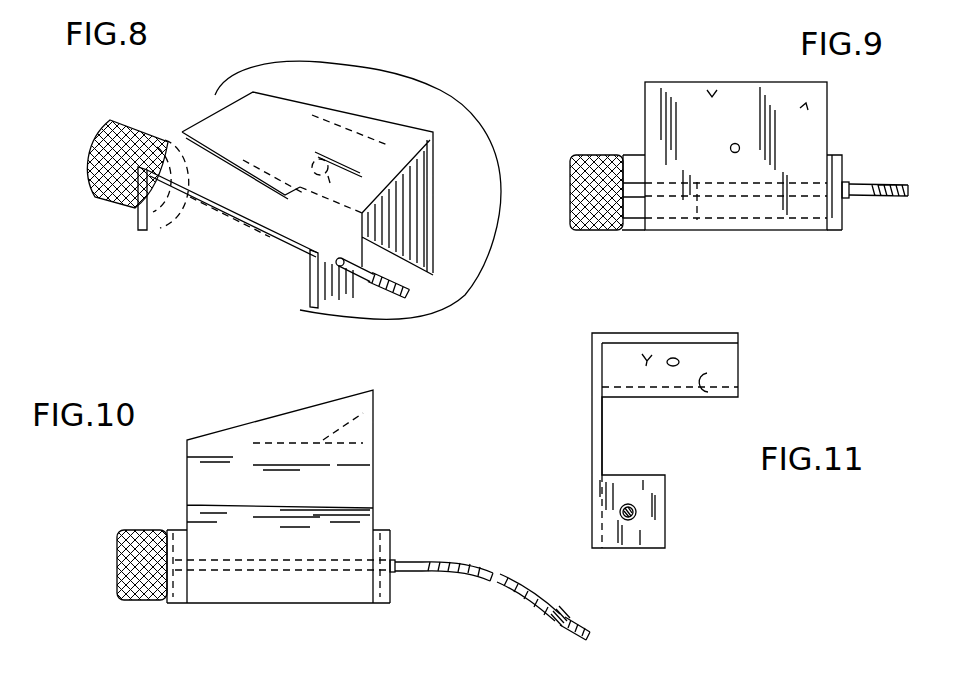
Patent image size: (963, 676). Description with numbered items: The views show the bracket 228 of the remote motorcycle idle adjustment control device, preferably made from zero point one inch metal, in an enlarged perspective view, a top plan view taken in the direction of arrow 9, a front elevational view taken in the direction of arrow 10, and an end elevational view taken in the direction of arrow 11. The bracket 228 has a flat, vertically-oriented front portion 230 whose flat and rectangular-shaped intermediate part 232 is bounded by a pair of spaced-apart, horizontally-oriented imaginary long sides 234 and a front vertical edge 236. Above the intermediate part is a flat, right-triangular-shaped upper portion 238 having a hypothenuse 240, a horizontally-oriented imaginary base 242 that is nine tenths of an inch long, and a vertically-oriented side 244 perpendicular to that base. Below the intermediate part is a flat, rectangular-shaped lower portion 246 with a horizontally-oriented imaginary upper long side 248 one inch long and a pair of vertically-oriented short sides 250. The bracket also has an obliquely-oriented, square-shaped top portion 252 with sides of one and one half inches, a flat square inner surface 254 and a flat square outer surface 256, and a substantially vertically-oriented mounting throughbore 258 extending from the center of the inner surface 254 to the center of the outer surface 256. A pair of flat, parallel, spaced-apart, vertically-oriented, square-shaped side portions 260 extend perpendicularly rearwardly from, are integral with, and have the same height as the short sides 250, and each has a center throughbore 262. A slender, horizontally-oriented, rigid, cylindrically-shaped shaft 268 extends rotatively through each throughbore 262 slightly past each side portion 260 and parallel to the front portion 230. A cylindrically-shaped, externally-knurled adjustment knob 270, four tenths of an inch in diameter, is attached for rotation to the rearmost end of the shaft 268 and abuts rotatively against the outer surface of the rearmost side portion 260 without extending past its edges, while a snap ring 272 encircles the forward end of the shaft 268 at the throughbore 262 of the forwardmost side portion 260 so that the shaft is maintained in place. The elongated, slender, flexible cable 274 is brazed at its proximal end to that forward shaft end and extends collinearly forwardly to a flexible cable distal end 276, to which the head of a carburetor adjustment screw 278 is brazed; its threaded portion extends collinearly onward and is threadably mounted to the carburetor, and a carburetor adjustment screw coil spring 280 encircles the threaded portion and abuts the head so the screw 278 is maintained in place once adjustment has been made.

In FIG. 8, the arrow 9 is at (403, 103).
In FIG. 9, the arrow 10 is at (720, 236).
In FIG. 10, the arrow 11 is at (430, 523).
In FIG. 8, the bracket 228 is at (207, 122).
In FIG. 9, the bracket 228 is at (673, 81).
In FIG. 10, the bracket 228 is at (234, 424).
In FIG. 11, the bracket 228 is at (590, 378).
In FIG. 8, the bracket flat, vertically-oriented front portion 230 is at (240, 117).
In FIG. 10, the bracket flat, vertically-oriented front portion 230 is at (200, 472).
In FIG. 11, the bracket flat, vertically-oriented front portion 230 is at (590, 418).
In FIG. 8, the bracket front portion flat and rectangular-shaped intermediate part 232 is at (412, 207).
In FIG. 10, the bracket front portion flat and rectangular-shaped intermediate part 232 is at (360, 463).
In FIG. 8, the bracket front portion intermediate part pair of spaced-apart and horizontally-or 234 is at (418, 102).
In FIG. 10, the bracket front portion intermediate part pair of spaced-apart and horizontally-or 234 is at (375, 411).
In FIG. 8, the bracket front portion intermediate part front vertical edge 236 is at (395, 223).
In FIG. 10, the bracket front portion intermediate part front vertical edge 236 is at (376, 507).
In FIG. 8, the bracket front flat, vertically-oriented, and right-triangular-shaped upper porti 238 is at (347, 117).
In FIG. 10, the bracket front flat, vertically-oriented, and right-triangular-shaped upper porti 238 is at (336, 420).
In FIG. 8, the bracket front upper portion hypothenuse 240 is at (290, 92).
In FIG. 10, the bracket front upper portion hypothenuse 240 is at (258, 422).
In FIG. 8, the bracket front upper portion horizontally-oriented imaginary base 242 is at (320, 131).
In FIG. 10, the bracket front upper portion horizontally-oriented imaginary base 242 is at (250, 471).
In FIG. 8, the bracket front upper portion vertically-oriented side 244 is at (367, 167).
In FIG. 10, the bracket front upper portion vertically-oriented side 244 is at (376, 428).
In FIG. 8, the bracket front flat, vertically-oriented, and rectangular-shaped lower portion 246 is at (222, 182).
In FIG. 10, the bracket front flat, vertically-oriented, and rectangular-shaped lower portion 246 is at (293, 595).
In FIG. 8, the bracket front lower portion horizontally-oriented imaginary upper long side 248 is at (232, 149).
In FIG. 10, the bracket front lower portion horizontally-oriented imaginary upper long side 248 is at (186, 510).
In FIG. 8, the bracket front lower portion pair of vertically-oriented short sides 250 is at (178, 132).
In FIG. 10, the bracket front lower portion pair of vertically-oriented short sides 250 is at (165, 530).
In FIG. 8, the bracket obliquely-oriented and square-shaped top portion 252 is at (493, 215).
In FIG. 9, the bracket obliquely-oriented and square-shaped top portion 252 is at (693, 127).
In FIG. 10, the bracket obliquely-oriented and square-shaped top portion 252 is at (207, 432).
In FIG. 11, the bracket obliquely-oriented and square-shaped top portion 252 is at (720, 360).
In FIG. 8, the bracket top portion flat and square-shaped inner surface 254 is at (400, 233).
In FIG. 9, the bracket top portion flat and square-shaped inner surface 254 is at (812, 102).
In FIG. 11, the bracket top portion flat and square-shaped inner surface 254 is at (708, 392).
In FIG. 9, the bracket top portion flat and square-shaped outer surface 256 is at (710, 89).
In FIG. 11, the bracket top portion flat and square-shaped outer surface 256 is at (636, 338).
In FIG. 8, the bracket top portion substantially vertically-oriented mounting throughbore 258 is at (314, 198).
In FIG. 9, the bracket top portion substantially vertically-oriented mounting throughbore 258 is at (733, 146).
In FIG. 10, the bracket top portion substantially vertically-oriented mounting throughbore 258 is at (281, 414).
In FIG. 11, the bracket top portion substantially vertically-oriented mounting throughbore 258 is at (677, 357).
In FIG. 8, the bracket pair of flat, parallel, spaced-apart, vertically-oriented, and square-sh 260 is at (245, 237).
In FIG. 9, the bracket pair of flat, parallel, spaced-apart, vertically-oriented, and square-sh 260 is at (632, 155).
In FIG. 10, the bracket pair of flat, parallel, spaced-apart, vertically-oriented, and square-sh 260 is at (165, 600).
In FIG. 11, the bracket pair of flat, parallel, spaced-apart, vertically-oriented, and square-sh 260 is at (652, 520).
In FIG. 9, the bracket side portion center throughbore 262 is at (627, 238).
In FIG. 10, the bracket side portion center throughbore 262 is at (183, 593).
In FIG. 11, the bracket side portion center throughbore 262 is at (633, 523).
In FIG. 8, the slender, horizontally-oriented, rigid, and cylindrically-shaped shaft 268 is at (147, 240).
In FIG. 9, the slender, horizontally-oriented, rigid, and cylindrically-shaped shaft 268 is at (760, 230).
In FIG. 10, the slender, horizontally-oriented, rigid, and cylindrically-shaped shaft 268 is at (252, 572).
In FIG. 8, the cylindrically-shaped and externally-knurled adjustment knob 270 is at (100, 140).
In FIG. 9, the cylindrically-shaped and externally-knurled adjustment knob 270 is at (575, 222).
In FIG. 10, the cylindrically-shaped and externally-knurled adjustment knob 270 is at (117, 547).
In FIG. 8, the snap ring 272 is at (340, 270).
In FIG. 9, the snap ring 272 is at (852, 196).
In FIG. 10, the snap ring 272 is at (400, 571).
In FIG. 11, the snap ring 272 is at (629, 505).
In FIG. 8, the elongated, slender, and flexible cable 274 is at (360, 286).
In FIG. 9, the elongated, slender, and flexible cable 274 is at (863, 183).
In FIG. 10, the elongated, slender, and flexible cable 274 is at (493, 566).
In FIG. 10, the flexible cable distal end 276 is at (555, 613).
In FIG. 10, the carburetor adjustment screw 278 is at (588, 622).
In FIG. 10, the carburetor adjustment screw coil spring 280 is at (560, 613).